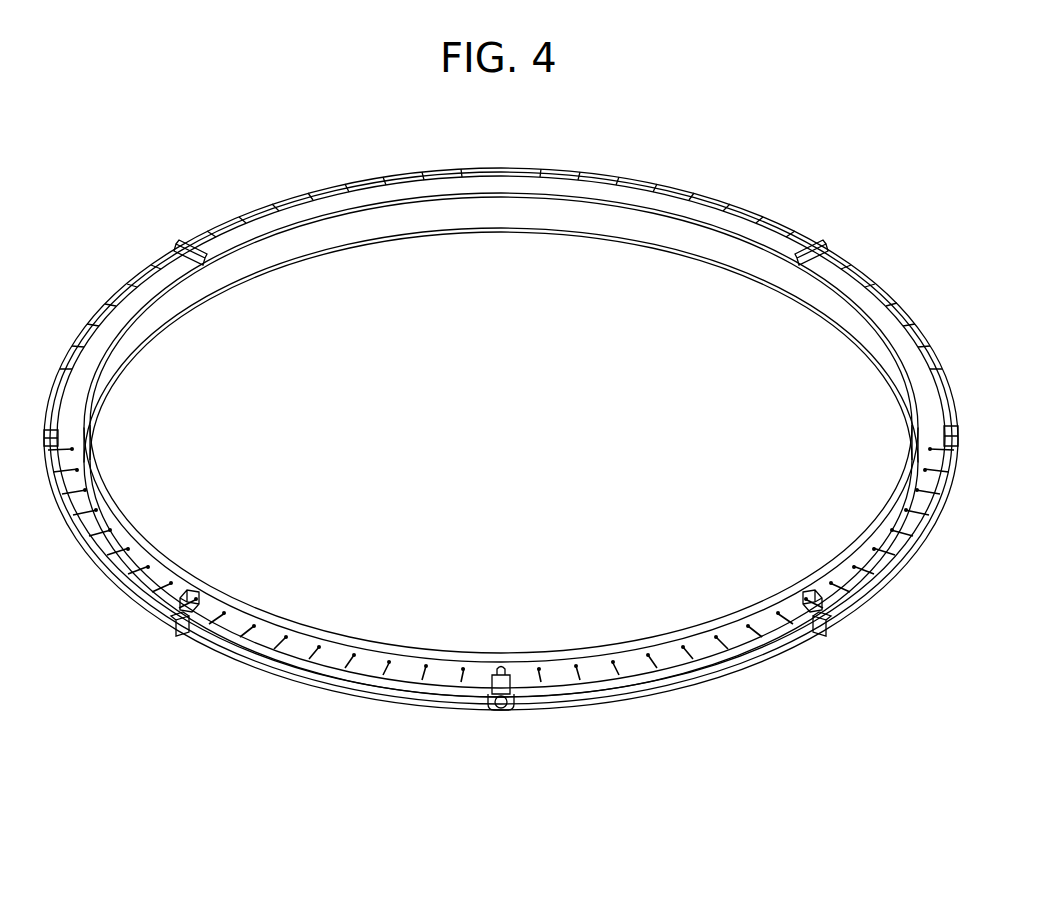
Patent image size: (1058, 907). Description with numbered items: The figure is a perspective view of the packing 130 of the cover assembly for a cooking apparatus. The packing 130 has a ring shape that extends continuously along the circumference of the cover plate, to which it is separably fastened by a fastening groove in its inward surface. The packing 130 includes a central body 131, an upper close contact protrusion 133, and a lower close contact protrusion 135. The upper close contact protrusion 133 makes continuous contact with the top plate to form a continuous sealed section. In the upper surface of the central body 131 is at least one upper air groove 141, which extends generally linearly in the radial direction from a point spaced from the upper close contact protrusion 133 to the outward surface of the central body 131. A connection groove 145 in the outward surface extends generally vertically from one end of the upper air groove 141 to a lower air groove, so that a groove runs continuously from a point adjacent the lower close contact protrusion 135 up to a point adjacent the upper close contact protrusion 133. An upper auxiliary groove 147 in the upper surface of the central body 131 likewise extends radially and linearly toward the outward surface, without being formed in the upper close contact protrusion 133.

The packing 130 is at (861, 122).
The central body 131 is at (740, 667).
The upper close contact protrusion 133 is at (916, 397).
The lower close contact protrusion 135 is at (632, 232).
The upper air groove 141 is at (812, 600).
The connection groove 145 is at (826, 631).
The upper auxiliary groove 147 is at (613, 676).